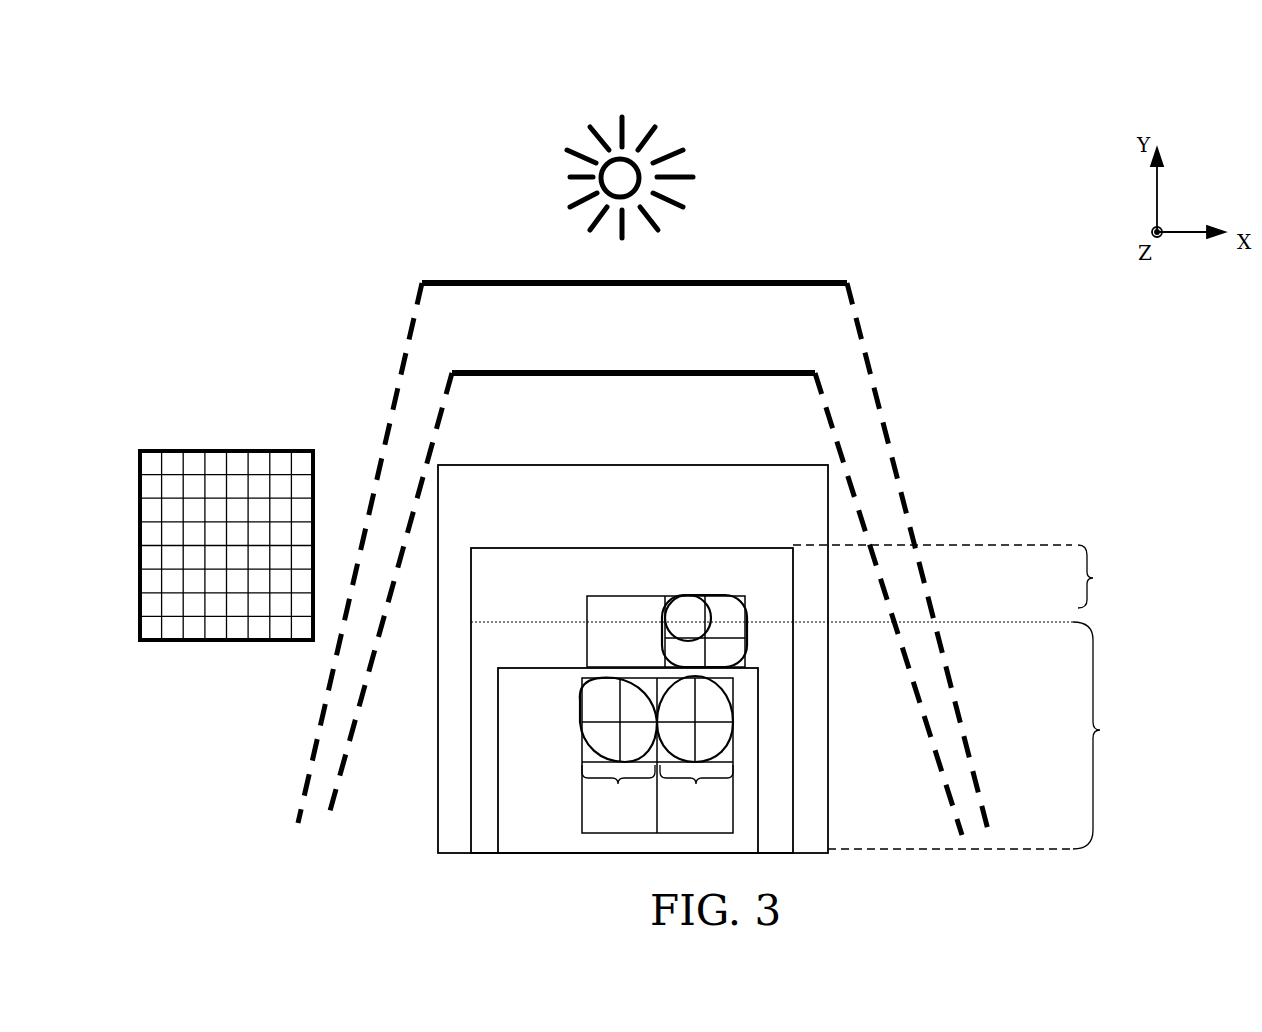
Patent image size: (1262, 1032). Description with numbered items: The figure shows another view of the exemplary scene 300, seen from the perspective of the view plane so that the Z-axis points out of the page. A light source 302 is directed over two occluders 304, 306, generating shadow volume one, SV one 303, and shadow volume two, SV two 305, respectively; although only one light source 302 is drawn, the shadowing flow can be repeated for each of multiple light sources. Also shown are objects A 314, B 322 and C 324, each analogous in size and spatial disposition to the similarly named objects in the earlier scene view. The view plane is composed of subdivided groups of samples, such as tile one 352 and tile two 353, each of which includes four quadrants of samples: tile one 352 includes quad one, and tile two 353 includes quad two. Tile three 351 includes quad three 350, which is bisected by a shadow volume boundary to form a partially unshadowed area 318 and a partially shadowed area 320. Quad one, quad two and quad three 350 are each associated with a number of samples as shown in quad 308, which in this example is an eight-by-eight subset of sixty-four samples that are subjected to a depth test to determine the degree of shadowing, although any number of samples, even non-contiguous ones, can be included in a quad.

The shadow rendering scene 300 is at (973, 68).
The light source 302 is at (646, 172).
The shadow volume one (SV1) 303 is at (470, 437).
The occluder 304 is at (642, 373).
The shadow volume two (SV2) 305 is at (470, 337).
The occluder 306 is at (753, 283).
The quad 308 is at (155, 451).
The object A 314 is at (546, 779).
The partially unshadowed area 318 is at (1094, 578).
The partially shadowed area 320 is at (1101, 730).
The object B 322 is at (558, 614).
The object C 324 is at (704, 514).
The Quad Three (Q3) 350 is at (688, 595).
The tile three 351 is at (747, 630).
The tile one (tile 1) 352 is at (580, 700).
The tile two (tile 2) 353 is at (735, 722).